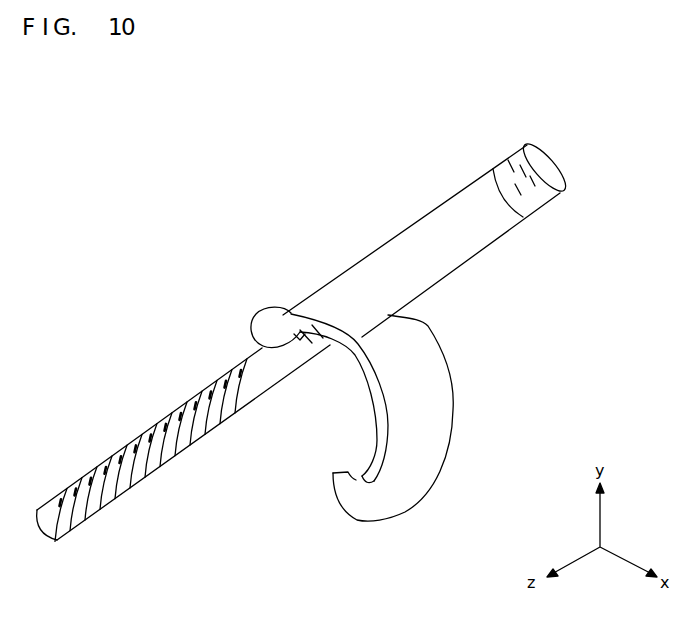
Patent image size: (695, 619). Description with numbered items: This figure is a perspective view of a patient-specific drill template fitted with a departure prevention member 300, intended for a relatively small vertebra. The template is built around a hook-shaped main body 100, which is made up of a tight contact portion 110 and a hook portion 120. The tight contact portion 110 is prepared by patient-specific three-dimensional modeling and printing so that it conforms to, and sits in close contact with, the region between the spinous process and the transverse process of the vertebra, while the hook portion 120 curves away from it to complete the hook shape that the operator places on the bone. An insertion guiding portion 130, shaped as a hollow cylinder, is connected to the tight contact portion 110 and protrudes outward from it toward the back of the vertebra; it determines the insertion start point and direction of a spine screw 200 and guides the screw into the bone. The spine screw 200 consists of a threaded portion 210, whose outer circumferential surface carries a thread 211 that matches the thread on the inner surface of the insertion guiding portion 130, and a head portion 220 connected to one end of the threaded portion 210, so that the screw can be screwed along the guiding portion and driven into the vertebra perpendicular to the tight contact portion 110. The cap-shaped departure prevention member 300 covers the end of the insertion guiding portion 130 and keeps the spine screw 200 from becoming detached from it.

The hook-shaped main body 100 is at (419, 437).
The tight contact portion 110 is at (368, 400).
The hook portion 120 is at (350, 497).
The insertion guiding portion 130 is at (443, 262).
The spine screw 200 is at (400, 113).
The threaded portion 210 is at (233, 367).
The thread 211 is at (158, 470).
The head portion 220 is at (523, 145).
The departure prevention member 300 is at (563, 197).